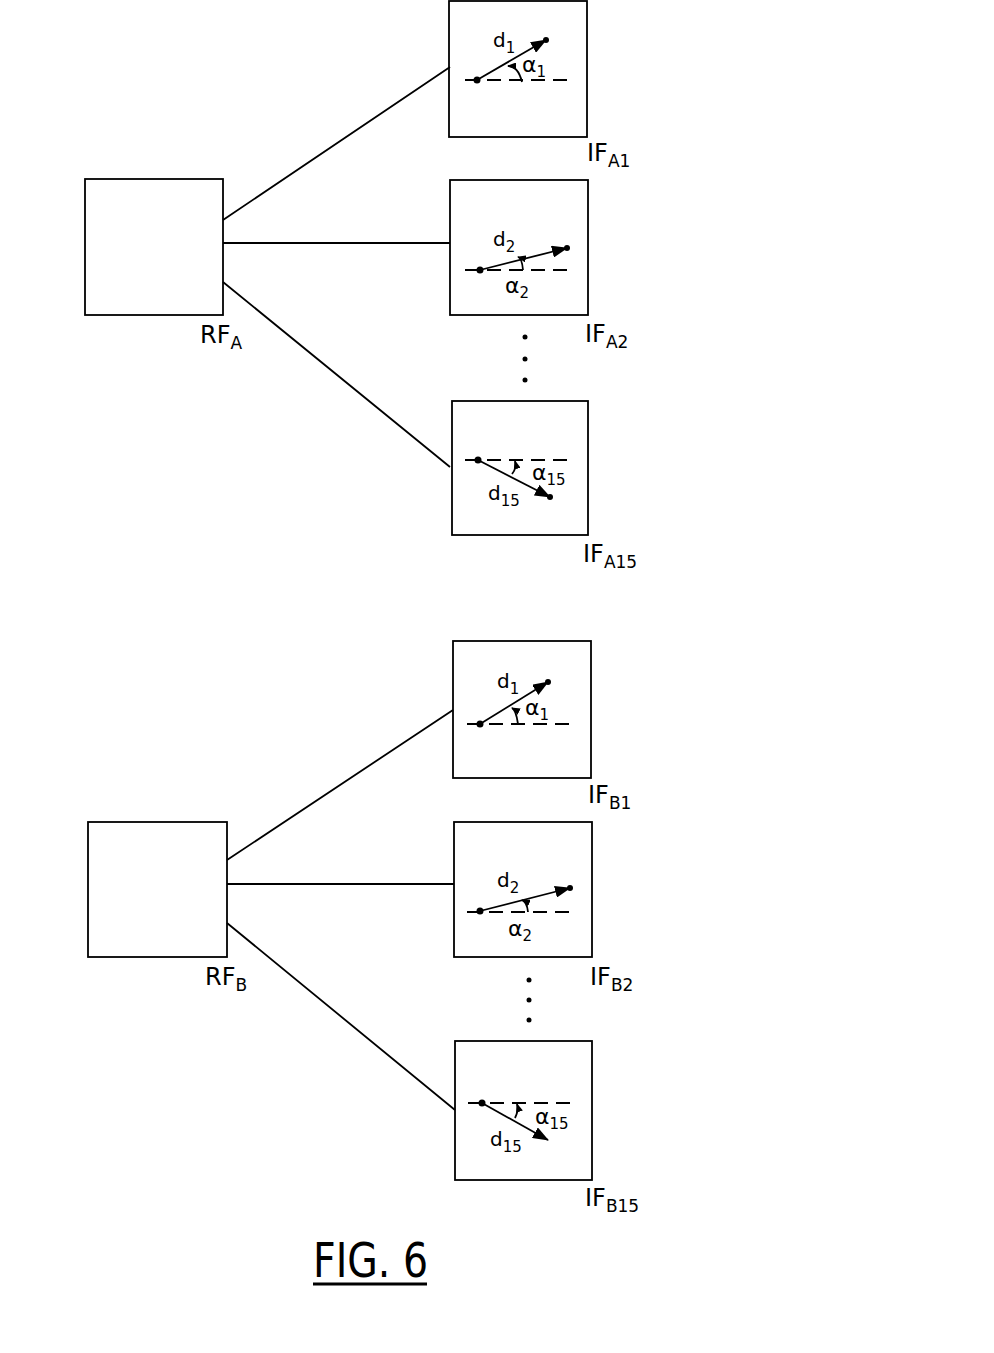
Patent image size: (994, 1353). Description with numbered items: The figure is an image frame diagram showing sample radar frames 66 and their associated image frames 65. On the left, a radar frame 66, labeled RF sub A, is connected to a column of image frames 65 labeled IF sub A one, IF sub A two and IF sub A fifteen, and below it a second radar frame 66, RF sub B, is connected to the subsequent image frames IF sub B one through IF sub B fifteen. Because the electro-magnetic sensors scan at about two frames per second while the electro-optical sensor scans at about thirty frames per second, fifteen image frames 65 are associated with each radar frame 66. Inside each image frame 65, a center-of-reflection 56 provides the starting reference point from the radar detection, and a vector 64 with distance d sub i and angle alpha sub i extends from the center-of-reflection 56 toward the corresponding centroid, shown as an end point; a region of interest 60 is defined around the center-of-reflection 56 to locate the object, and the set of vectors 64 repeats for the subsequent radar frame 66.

The center-of-reflection 56 is at (478, 84).
The region of interest 60 is at (546, 40).
The vector 64 is at (495, 66).
The image frame 65 is at (588, 33).
The radar frame 66 is at (177, 178).